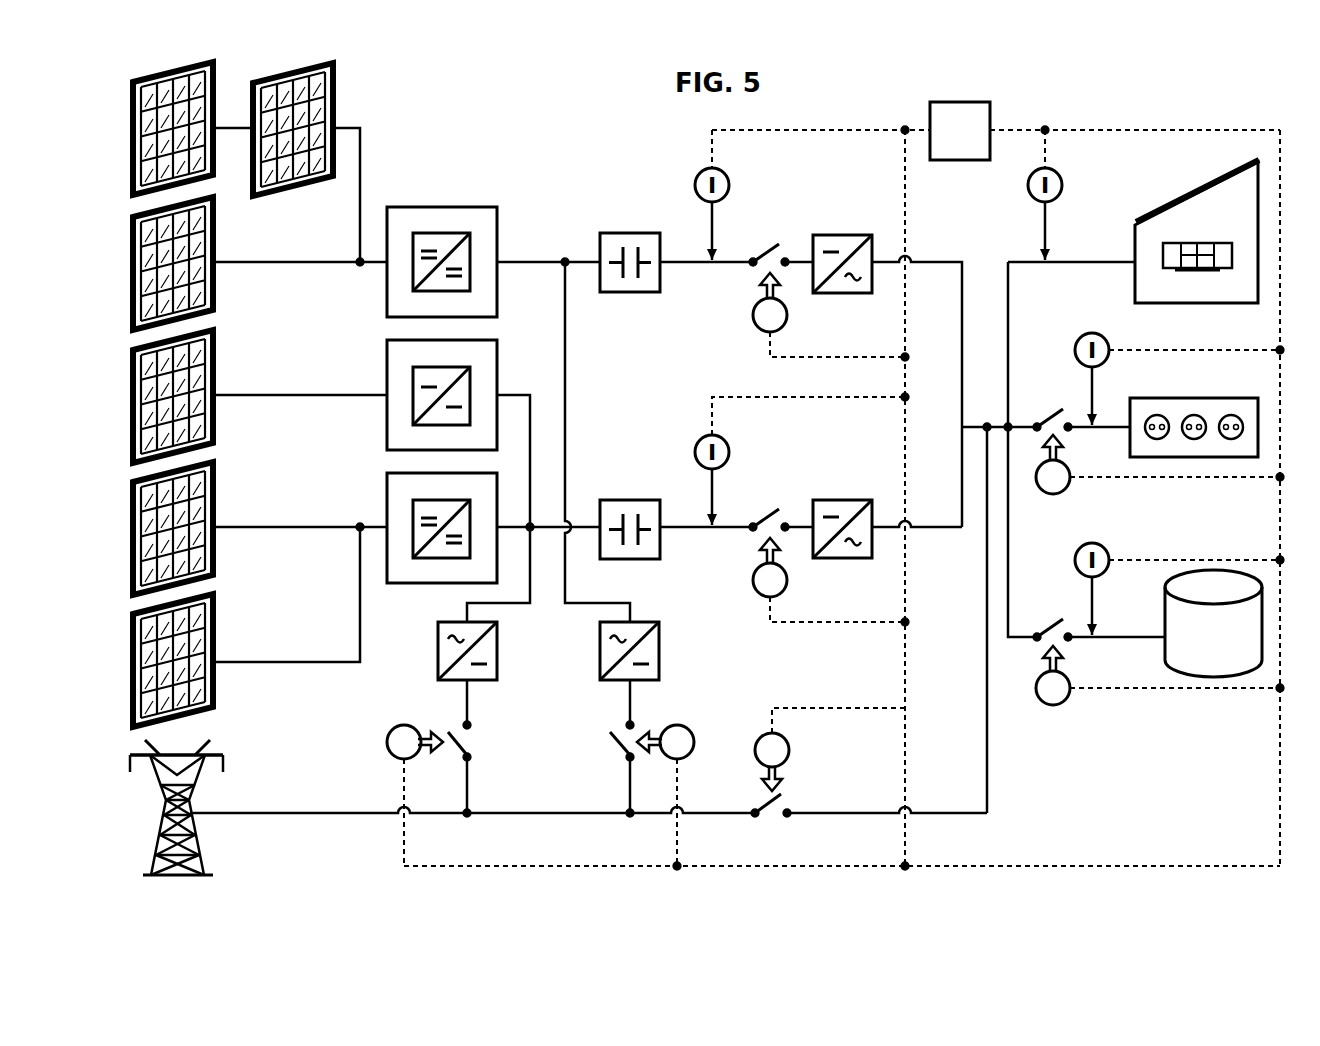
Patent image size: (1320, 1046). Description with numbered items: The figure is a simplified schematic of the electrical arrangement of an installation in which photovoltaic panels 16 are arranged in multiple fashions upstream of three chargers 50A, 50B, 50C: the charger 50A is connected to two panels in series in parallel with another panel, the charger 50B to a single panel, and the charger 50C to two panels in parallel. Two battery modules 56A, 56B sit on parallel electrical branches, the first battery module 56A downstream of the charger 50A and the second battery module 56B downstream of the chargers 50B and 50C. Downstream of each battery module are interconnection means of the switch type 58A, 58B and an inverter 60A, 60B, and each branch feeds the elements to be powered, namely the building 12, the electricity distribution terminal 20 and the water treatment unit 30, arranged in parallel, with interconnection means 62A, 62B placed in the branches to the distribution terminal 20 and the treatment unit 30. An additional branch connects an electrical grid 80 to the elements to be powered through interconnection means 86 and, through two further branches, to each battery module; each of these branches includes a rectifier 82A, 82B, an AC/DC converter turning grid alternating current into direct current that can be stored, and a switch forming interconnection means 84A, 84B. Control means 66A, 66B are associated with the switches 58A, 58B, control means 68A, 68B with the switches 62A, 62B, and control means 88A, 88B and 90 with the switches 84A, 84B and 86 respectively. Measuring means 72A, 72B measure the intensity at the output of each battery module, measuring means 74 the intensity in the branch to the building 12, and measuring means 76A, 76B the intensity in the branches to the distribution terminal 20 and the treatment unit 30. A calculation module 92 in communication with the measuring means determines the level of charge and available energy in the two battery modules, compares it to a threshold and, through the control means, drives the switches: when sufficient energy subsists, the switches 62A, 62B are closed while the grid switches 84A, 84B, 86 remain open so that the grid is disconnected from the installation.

The photovoltaic panels 16 is at (383, 93).
The charger 50A is at (440, 207).
The charger 50B is at (387, 368).
The charger 50C is at (387, 500).
The first battery module 56A is at (625, 233).
The second battery module 56B is at (625, 500).
The measuring means 72A is at (728, 177).
The measuring means 72B is at (728, 444).
The switch 58A is at (770, 248).
The switch 58B is at (770, 513).
The inverter 60A is at (838, 235).
The inverter 60B is at (838, 500).
The control means 66A is at (789, 316).
The control means 66B is at (789, 581).
The calculation module 92 is at (842, 486).
The measuring means 74 is at (1061, 178).
The building 12 is at (1178, 192).
The measuring means 76A is at (1078, 340).
The measuring means 76B is at (1078, 550).
The interconnection means 62A is at (1053, 412).
The interconnection means 62B is at (1053, 622).
The electricity distribution terminal 20 is at (1197, 393).
The control means 68A is at (1073, 485).
The control means 68B is at (1073, 697).
The water treatment unit 30 is at (1163, 623).
The rectifier 82A is at (662, 652).
The rectifier 82B is at (500, 652).
The interconnection means 84A is at (616, 744).
The interconnection means 84B is at (462, 742).
The control means 88A is at (680, 725).
The control means 88B is at (390, 748).
The control means 90 is at (757, 752).
The interconnection means 86 is at (772, 810).
The electrical grid 80 is at (246, 746).